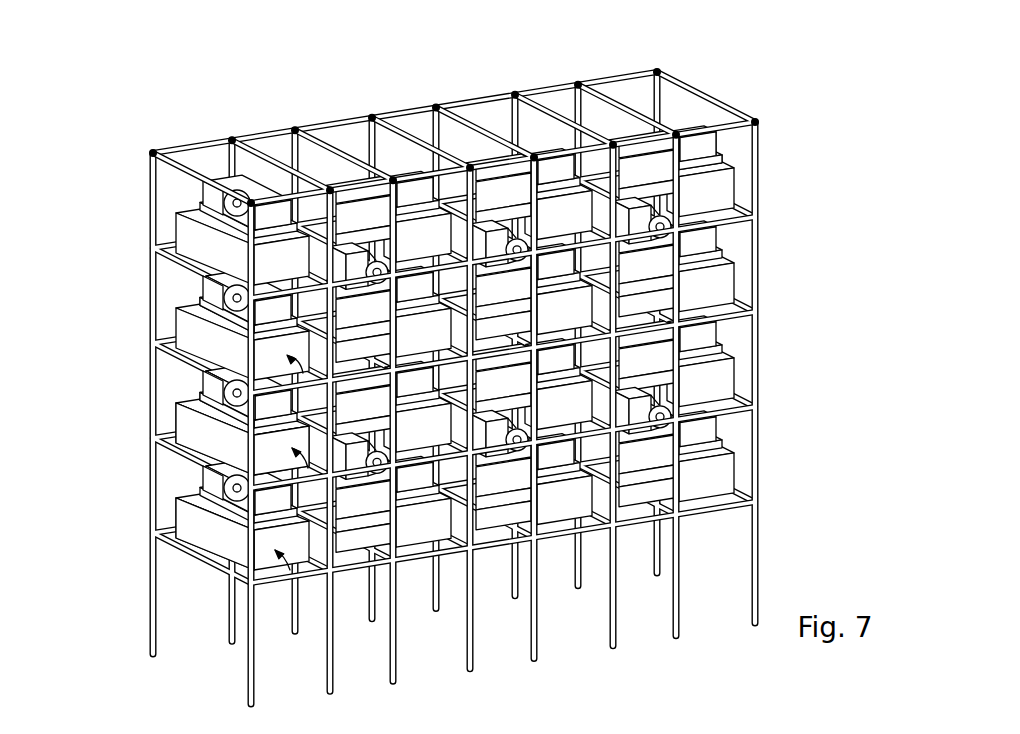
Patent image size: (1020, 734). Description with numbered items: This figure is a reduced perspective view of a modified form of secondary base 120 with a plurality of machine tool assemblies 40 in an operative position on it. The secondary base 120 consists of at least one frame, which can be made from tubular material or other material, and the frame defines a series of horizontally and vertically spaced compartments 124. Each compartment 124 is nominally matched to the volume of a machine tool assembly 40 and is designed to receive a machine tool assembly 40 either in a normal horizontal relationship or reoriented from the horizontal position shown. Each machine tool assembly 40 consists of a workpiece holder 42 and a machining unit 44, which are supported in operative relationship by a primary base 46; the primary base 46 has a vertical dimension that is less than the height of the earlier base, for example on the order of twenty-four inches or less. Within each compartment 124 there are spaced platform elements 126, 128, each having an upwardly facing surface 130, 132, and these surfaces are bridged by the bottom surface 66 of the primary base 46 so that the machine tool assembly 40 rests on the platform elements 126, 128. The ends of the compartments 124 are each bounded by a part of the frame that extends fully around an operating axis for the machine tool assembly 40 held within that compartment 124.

The secondary base 120 is at (531, 88).
The workpiece holder 42 is at (670, 110).
The machining unit 44 is at (708, 125).
The machine tool assembly 40 is at (454, 348).
The primary base 46 is at (184, 322).
The compartment 124 is at (187, 388).
The upwardly facing surface 132 is at (170, 432).
The platform element 128 is at (177, 460).
The bottom surface 66 is at (203, 467).
The platform element 126 is at (240, 515).
The upwardly facing surface 130 is at (323, 472).